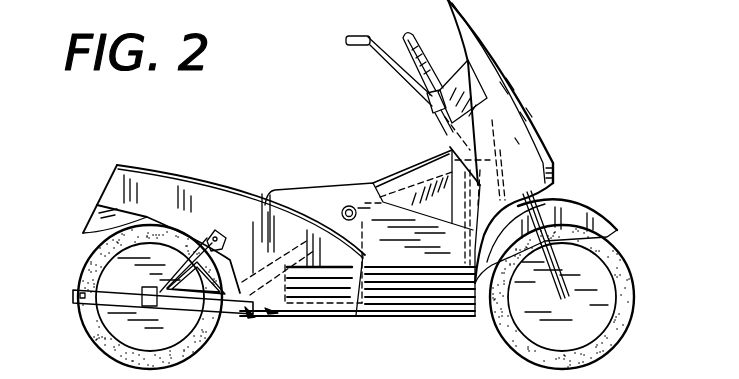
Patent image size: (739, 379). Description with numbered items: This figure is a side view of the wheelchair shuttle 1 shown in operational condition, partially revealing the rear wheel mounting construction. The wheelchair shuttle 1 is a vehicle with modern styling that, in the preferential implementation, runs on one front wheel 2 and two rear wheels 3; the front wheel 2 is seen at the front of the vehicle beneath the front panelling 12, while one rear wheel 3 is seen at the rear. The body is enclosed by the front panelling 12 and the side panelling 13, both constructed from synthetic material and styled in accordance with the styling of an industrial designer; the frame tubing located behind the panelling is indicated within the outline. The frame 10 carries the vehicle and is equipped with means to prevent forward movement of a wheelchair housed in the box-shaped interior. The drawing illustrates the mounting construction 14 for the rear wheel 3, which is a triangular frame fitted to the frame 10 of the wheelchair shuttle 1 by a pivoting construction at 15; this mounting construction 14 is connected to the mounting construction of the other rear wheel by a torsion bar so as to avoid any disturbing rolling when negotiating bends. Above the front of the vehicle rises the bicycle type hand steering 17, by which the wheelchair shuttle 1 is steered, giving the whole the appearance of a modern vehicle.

The wheelchair shuttle 1 is at (258, 160).
The front wheel 2 is at (623, 327).
The rear wheel 3 is at (80, 307).
The frame 10 is at (393, 176).
The front panelling 12 is at (533, 118).
The side panelling 13 is at (403, 257).
The mounting construction 14 is at (250, 312).
The pivoting construction 15 is at (272, 312).
The hand steering 17 is at (347, 40).